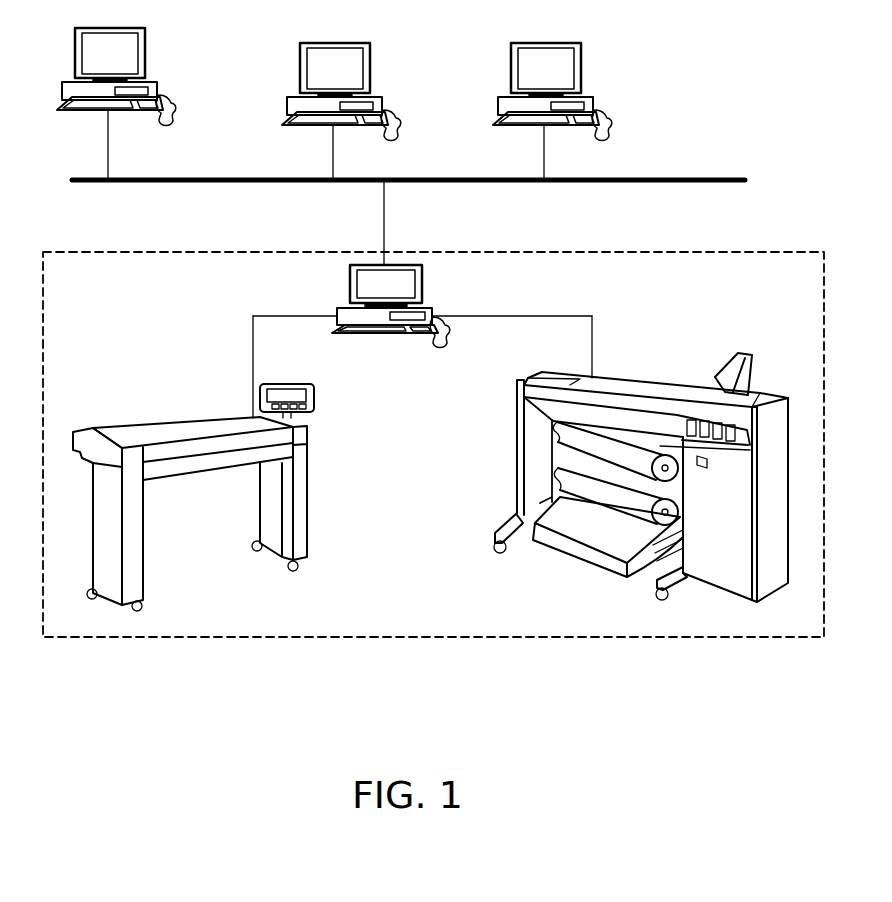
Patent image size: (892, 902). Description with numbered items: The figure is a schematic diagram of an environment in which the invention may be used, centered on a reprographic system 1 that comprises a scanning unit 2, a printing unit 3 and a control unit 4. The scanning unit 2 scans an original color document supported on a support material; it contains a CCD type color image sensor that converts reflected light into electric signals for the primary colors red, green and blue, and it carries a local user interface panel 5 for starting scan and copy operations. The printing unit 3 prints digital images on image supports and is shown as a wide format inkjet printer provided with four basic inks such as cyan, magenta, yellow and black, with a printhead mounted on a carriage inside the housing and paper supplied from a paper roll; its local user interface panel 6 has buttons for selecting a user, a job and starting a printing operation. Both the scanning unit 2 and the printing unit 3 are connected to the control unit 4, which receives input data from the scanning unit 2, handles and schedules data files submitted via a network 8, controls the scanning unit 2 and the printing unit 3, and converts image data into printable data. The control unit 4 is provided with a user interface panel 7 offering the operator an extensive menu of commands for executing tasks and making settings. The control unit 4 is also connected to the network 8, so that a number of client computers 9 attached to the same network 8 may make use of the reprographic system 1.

The reprographic system 1 is at (58, 250).
The scanning unit 2 is at (167, 420).
The printing unit 3 is at (646, 460).
The control unit 4 is at (437, 309).
The local user interface panel 5 is at (314, 398).
The local user interface panel 6 is at (728, 354).
The user interface panel 7 is at (350, 282).
The network 8 is at (738, 183).
The client computers 9 is at (155, 80).